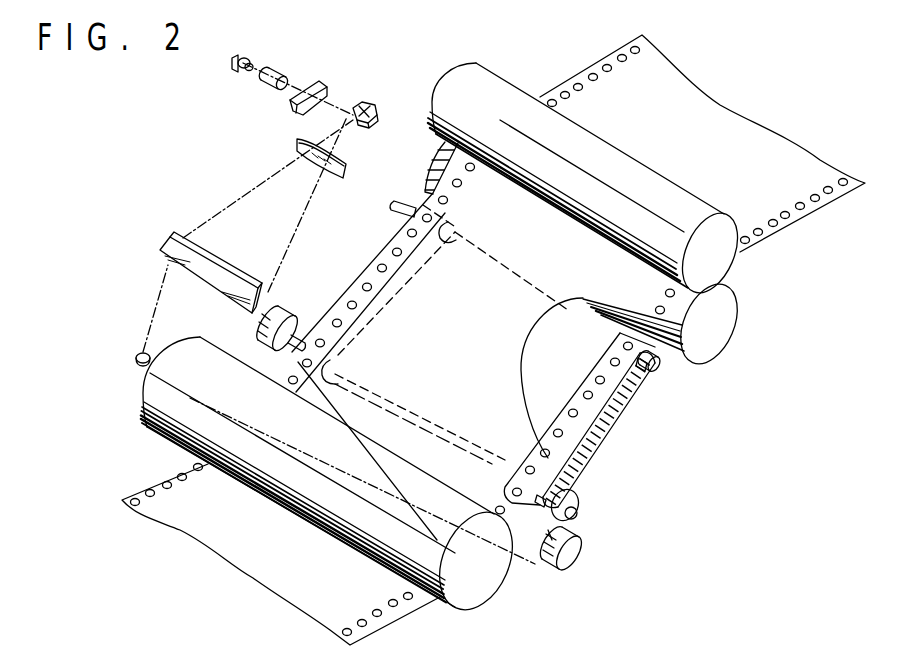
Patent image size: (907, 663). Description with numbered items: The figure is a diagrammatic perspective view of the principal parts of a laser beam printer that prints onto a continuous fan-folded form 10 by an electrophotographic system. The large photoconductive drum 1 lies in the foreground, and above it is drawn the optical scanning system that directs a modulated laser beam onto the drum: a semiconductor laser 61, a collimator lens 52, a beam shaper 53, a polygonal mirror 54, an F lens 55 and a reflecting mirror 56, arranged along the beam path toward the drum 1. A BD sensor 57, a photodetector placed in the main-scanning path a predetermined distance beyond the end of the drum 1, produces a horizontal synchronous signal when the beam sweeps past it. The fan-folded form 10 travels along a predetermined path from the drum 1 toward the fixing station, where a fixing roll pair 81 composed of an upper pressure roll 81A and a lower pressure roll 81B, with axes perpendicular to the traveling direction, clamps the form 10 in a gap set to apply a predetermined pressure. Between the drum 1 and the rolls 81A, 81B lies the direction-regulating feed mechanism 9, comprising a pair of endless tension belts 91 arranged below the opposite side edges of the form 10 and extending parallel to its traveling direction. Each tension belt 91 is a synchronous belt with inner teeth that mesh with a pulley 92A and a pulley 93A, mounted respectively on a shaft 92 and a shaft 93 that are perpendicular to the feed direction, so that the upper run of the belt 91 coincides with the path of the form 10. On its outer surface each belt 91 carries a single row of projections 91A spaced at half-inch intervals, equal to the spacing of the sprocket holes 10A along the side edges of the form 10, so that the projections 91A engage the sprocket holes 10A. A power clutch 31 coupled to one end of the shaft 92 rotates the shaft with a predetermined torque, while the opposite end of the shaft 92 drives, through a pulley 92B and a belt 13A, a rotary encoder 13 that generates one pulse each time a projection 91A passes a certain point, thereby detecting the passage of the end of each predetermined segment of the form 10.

The photoconductive drum 1 is at (483, 587).
The fan-folded form 10 is at (481, 340).
The sprocket holes 10A is at (185, 475).
The direction-regulating feed mechanism 9 is at (507, 338).
The tension belt 91 is at (327, 330).
The projections 91A is at (350, 304).
The shaft 92 is at (577, 513).
The pulley 92A is at (557, 482).
The pulley 92B is at (574, 496).
The shaft 93 is at (660, 366).
The pulley 93A is at (659, 385).
The rotary encoder 13 is at (571, 558).
The belt 13A is at (548, 538).
The power clutch 31 is at (256, 328).
The collimator lens 52 is at (280, 72).
The beam shaper 53 is at (320, 82).
The polygonal mirror 54 is at (363, 100).
The F lens 55 is at (300, 143).
The reflecting mirror 56 is at (160, 252).
The BD sensor 57 is at (137, 354).
The semiconductor laser 61 is at (240, 56).
The fixing roll pair 81 is at (637, 260).
The upper pressure roll 81A is at (808, 264).
The lower pressure roll 81B is at (727, 262).